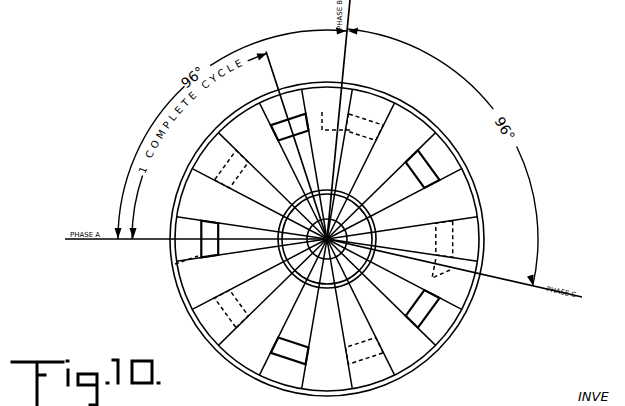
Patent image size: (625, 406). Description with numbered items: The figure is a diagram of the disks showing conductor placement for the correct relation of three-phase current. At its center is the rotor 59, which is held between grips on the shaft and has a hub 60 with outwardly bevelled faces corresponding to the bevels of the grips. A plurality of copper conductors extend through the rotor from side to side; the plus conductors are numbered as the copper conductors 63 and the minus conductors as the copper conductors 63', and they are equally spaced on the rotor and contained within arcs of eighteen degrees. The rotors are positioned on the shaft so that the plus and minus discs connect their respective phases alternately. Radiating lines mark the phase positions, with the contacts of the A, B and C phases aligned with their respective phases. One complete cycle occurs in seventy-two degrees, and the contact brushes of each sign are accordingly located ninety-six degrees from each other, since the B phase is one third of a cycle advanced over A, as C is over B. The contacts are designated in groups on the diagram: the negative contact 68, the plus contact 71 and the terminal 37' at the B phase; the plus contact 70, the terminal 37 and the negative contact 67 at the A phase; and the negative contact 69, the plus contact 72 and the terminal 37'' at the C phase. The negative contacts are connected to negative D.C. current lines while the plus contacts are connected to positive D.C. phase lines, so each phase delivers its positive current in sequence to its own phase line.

The rotor 59 is at (468, 170).
The hub 60 is at (367, 217).
The copper conductors 63 is at (338, 213).
The copper conductors 63' is at (297, 207).
The negative contact 68 is at (307, 70).
The plus contact 71 is at (307, 70).
The coil terminal 37' is at (307, 70).
The plus contact 70 is at (136, 268).
The coil terminal 37 is at (136, 268).
The negative contact 67 is at (175, 264).
The negative contact 69 is at (503, 286).
The plus contact 72 is at (503, 286).
The coil terminal 37'' is at (503, 286).